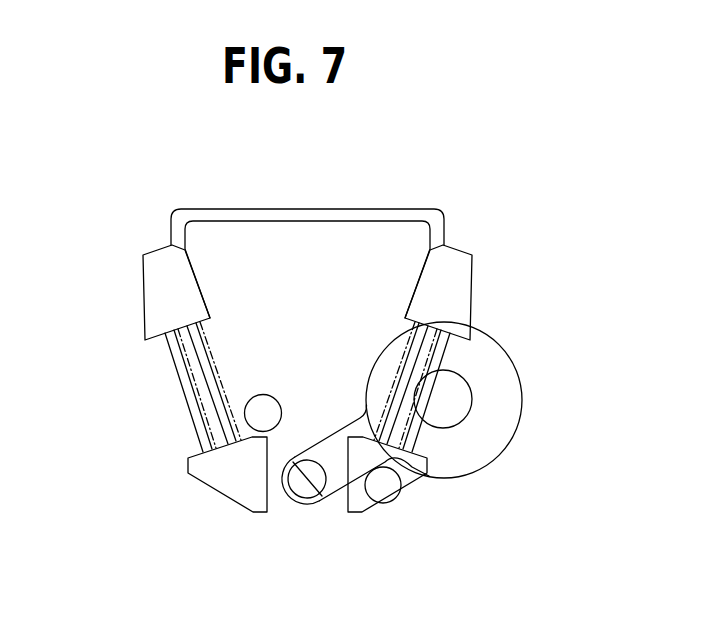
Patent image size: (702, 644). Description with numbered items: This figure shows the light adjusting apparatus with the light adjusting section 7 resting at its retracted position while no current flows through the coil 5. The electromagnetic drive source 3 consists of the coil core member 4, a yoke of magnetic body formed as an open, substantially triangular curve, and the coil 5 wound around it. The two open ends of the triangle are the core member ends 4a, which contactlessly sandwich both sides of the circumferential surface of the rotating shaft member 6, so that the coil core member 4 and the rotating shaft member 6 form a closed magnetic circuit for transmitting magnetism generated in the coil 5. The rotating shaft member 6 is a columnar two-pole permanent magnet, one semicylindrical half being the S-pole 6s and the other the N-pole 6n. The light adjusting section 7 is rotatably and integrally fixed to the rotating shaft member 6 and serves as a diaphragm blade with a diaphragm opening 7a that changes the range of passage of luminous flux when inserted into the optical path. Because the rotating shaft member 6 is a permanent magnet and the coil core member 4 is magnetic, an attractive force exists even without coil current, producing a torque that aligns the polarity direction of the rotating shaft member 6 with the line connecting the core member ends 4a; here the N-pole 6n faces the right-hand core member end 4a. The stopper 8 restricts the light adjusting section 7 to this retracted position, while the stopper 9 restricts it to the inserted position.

The electromagnetic drive source 3 is at (55, 293).
The coil core member 4 is at (157, 297).
The core member ends 4a is at (268, 497).
The coil 5 is at (175, 368).
The rotating shaft member 6 is at (312, 500).
The N-pole 6n is at (305, 461).
The S-pole 6s is at (289, 492).
The light adjusting section 7 is at (487, 343).
The diaphragm opening 7a is at (469, 402).
The stopper 8 is at (390, 501).
The stopper 9 is at (265, 412).